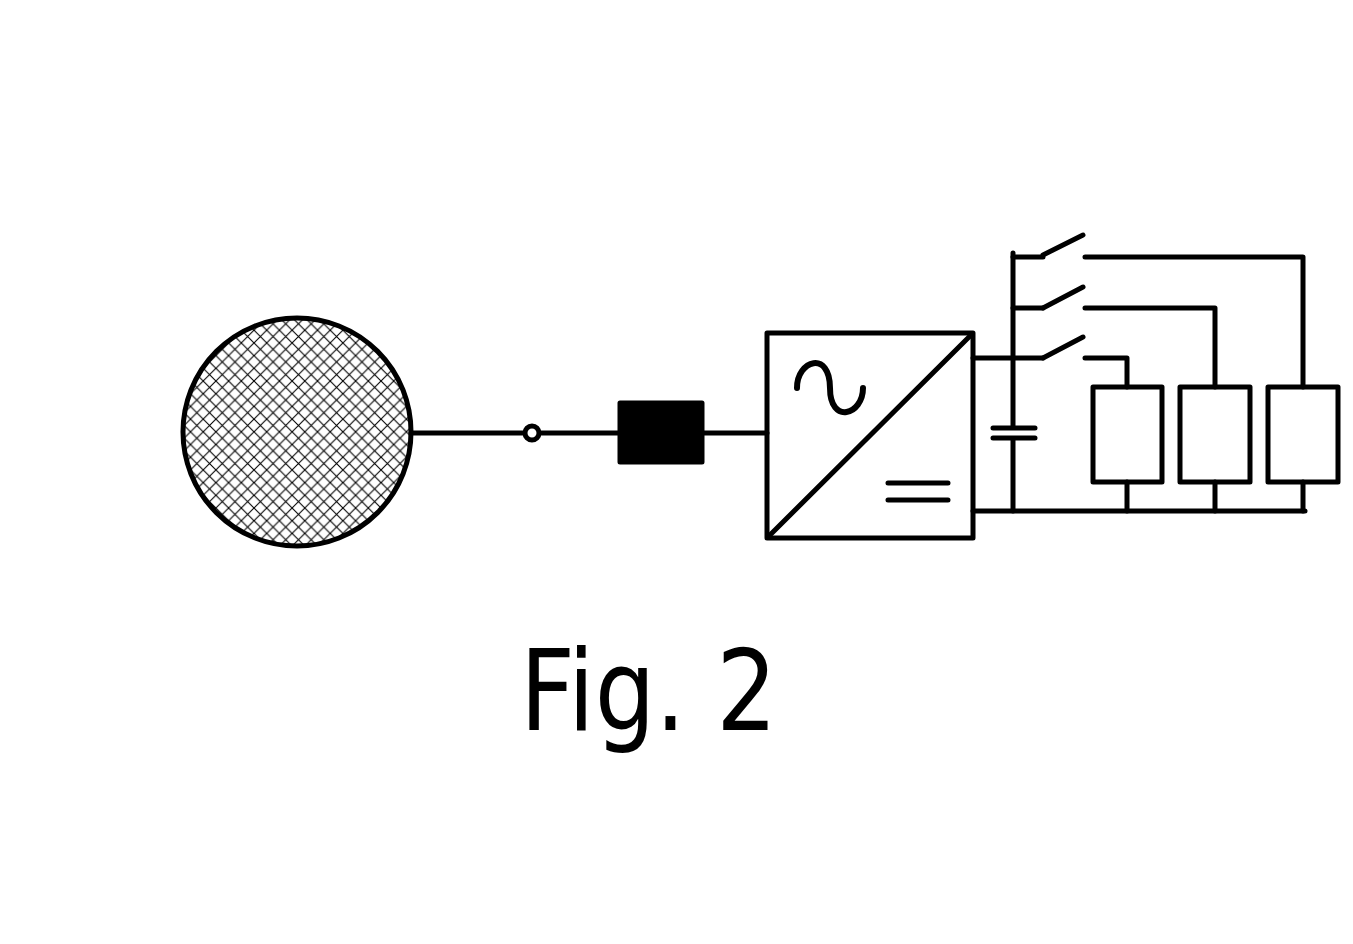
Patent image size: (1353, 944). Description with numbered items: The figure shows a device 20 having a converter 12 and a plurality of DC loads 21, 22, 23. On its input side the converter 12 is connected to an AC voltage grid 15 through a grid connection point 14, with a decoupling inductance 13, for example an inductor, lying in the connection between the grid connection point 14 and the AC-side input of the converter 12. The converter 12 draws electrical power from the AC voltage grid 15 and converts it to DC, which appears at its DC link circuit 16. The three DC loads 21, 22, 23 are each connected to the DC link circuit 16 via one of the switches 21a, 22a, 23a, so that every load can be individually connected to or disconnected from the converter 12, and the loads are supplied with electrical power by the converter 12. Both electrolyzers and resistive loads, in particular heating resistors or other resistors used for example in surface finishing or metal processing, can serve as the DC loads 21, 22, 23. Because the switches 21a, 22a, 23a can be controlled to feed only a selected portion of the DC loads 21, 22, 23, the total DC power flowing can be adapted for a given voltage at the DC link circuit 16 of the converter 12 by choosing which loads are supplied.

The converter 12 is at (808, 333).
The decoupling inductance 13 is at (645, 404).
The grid connection point 14 is at (528, 427).
The AC voltage grid 15 is at (223, 342).
The DC link circuit 16 is at (1006, 453).
The device 20 is at (1073, 160).
The DC load 21 is at (1113, 483).
The DC load 22 is at (1200, 483).
The DC load 23 is at (1288, 483).
The switch 21a is at (1050, 345).
The switch 22a is at (1050, 292).
The switch 23a is at (1050, 240).